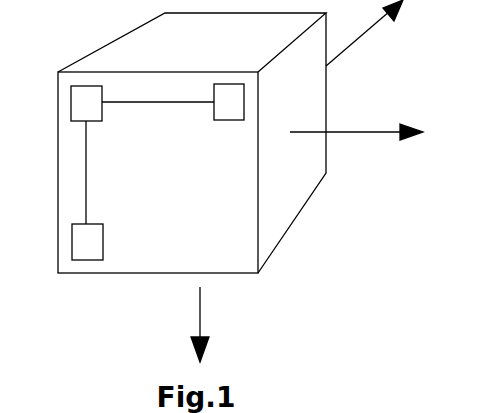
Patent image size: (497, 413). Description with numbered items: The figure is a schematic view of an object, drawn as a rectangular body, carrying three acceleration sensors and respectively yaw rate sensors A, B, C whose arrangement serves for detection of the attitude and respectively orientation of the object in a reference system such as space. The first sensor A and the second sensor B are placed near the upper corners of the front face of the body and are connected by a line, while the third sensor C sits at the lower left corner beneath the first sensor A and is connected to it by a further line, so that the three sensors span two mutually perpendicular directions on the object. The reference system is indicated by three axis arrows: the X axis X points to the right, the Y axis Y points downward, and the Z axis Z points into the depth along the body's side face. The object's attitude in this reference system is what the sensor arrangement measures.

The acceleration sensor A is at (97, 116).
The acceleration sensor B is at (229, 115).
The acceleration sensor C is at (99, 242).
The X axis X is at (356, 148).
The Y axis Y is at (213, 325).
The Z axis Z is at (370, 33).